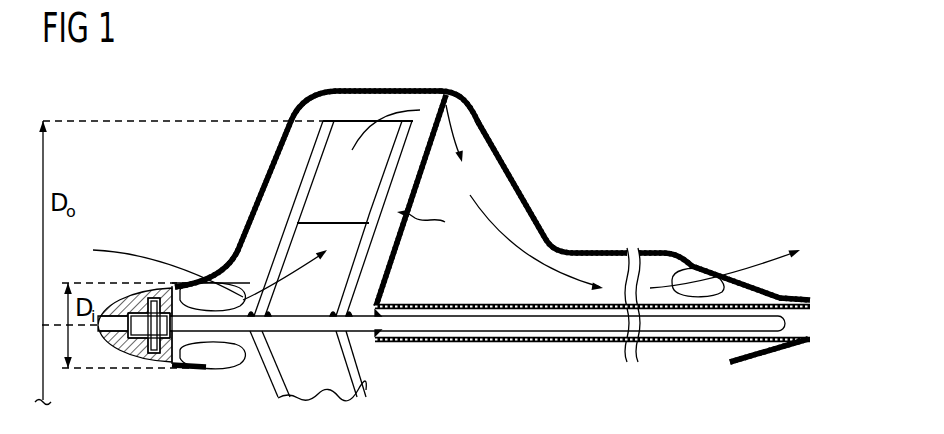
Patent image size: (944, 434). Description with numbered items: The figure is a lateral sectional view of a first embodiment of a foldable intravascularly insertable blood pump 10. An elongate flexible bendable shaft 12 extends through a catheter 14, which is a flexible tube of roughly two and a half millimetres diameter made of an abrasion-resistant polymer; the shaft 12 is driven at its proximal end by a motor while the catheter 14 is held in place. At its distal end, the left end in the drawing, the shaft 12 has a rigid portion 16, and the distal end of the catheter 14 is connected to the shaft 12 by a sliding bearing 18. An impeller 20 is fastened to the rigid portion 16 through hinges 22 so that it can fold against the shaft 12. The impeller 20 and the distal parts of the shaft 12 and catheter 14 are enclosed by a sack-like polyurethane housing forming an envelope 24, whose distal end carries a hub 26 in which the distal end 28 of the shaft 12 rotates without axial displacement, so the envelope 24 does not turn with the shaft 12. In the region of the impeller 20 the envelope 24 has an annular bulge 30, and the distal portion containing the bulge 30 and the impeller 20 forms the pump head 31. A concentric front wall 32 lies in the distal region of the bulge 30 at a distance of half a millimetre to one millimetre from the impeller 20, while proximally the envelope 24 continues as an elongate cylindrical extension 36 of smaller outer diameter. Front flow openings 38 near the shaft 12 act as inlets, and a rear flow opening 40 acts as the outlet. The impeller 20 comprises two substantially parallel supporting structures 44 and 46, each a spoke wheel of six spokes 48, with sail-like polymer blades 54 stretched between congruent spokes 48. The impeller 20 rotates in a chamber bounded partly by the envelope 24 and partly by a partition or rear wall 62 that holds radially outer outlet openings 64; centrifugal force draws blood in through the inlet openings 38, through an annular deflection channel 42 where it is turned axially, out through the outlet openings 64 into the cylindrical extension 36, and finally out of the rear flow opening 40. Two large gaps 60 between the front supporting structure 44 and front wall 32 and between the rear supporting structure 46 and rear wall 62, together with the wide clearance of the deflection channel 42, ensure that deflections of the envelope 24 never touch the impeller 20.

The flow meter device 10 is at (560, 138).
The shaft 12 is at (467, 330).
The catheter 14 is at (568, 342).
The rigid portion 16 is at (303, 327).
The sliding bearing 18 is at (385, 343).
The impeller 20 is at (437, 223).
The hinges 22 is at (337, 313).
The housing / envelope 24 is at (527, 218).
The hub 26 is at (112, 343).
The distal end of the shaft 28 is at (140, 330).
The annular bulge 30 is at (455, 79).
The pump head 31 is at (306, 84).
The front wall 32 is at (257, 192).
The cylindrical extension 36 is at (657, 250).
The front flow opening / inlet opening 38 is at (223, 282).
The rear flow opening / outlet opening 40 is at (690, 280).
The annular deflection channel 42 is at (373, 107).
The front supporting structure 44 is at (302, 177).
The rear supporting structure 46 is at (390, 186).
The spokes 48 is at (282, 233).
The blades 54 is at (350, 121).
The gaps 60 is at (293, 145).
The partition wall / rear wall 62 is at (395, 245).
The blood flow outlet openings 64 is at (452, 107).